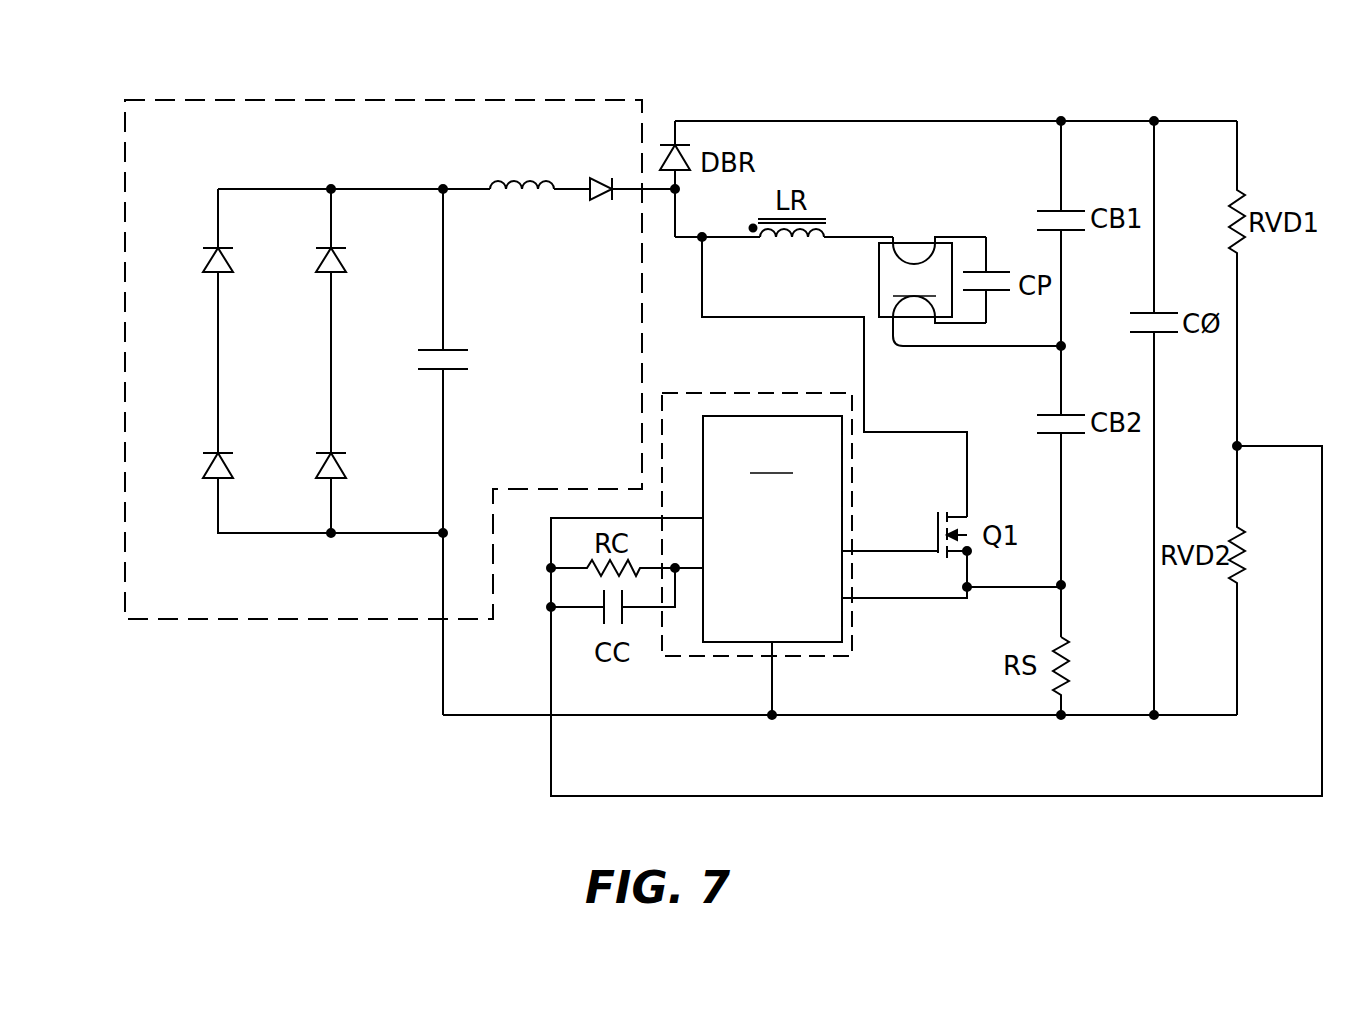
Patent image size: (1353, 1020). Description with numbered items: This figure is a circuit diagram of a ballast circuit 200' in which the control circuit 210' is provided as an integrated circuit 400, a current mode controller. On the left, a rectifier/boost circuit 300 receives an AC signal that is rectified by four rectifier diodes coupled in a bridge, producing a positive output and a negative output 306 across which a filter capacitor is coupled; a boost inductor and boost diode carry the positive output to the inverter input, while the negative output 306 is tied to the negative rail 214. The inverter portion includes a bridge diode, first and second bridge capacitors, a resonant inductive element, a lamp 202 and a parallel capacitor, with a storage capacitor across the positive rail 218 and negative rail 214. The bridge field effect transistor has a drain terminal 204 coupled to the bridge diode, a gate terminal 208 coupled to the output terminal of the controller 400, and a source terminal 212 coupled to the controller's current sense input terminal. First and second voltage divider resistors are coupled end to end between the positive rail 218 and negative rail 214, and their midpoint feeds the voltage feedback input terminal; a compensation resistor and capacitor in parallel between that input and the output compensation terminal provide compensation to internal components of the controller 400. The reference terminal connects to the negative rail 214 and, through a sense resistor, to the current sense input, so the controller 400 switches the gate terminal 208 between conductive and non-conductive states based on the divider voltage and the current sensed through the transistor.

The rectifier/boost circuit 300 is at (436, 100).
The negative output 306 is at (260, 535).
The positive rail 218 is at (873, 121).
The ballast circuit 200' is at (1045, 83).
The lamp 202 is at (970, 291).
The control circuit 210' is at (757, 505).
The integrated circuit 400 is at (772, 529).
The gate terminal 208 is at (858, 550).
The drain terminal 204 is at (967, 483).
The source terminal 212 is at (967, 570).
The negative rail 214 is at (663, 716).